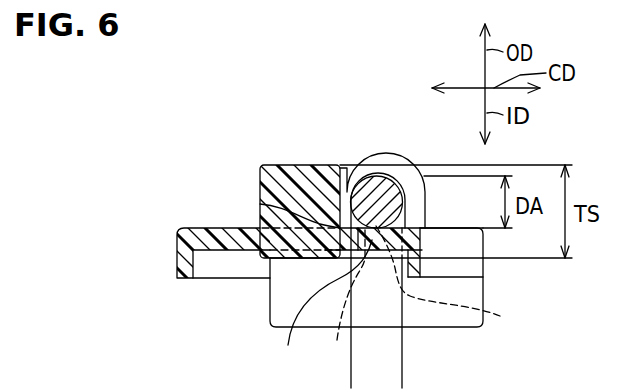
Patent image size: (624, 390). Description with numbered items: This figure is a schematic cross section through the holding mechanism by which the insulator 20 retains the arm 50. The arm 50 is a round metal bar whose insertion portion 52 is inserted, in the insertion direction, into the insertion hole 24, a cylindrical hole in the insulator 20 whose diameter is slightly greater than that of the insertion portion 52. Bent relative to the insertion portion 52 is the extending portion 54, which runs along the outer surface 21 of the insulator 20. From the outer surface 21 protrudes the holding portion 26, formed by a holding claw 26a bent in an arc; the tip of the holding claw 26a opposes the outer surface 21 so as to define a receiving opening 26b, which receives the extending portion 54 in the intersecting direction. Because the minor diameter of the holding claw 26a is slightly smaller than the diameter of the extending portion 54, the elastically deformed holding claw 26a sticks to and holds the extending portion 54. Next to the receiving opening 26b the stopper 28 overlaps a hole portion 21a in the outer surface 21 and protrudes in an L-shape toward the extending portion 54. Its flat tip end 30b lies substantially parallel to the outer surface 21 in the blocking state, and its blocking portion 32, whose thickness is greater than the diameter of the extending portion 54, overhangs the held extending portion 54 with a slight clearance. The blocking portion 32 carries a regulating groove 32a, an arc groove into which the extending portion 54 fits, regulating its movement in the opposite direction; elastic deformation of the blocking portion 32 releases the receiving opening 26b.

The insulator 20 is at (488, 279).
The outer surface 21 is at (192, 228).
The hole portion 21a is at (251, 253).
The insertion hole 24 is at (448, 279).
The holding portion 26 is at (369, 144).
The holding claw 26a is at (381, 152).
The receiving opening 26b is at (405, 98).
The stopper 28 is at (260, 170).
The flat tip end 30b is at (302, 159).
The blocking portion 32 is at (238, 243).
The regulating groove 32a is at (260, 205).
The arm 50 is at (403, 349).
The insertion portion 52 is at (344, 297).
The extending portion 54 is at (324, 302).